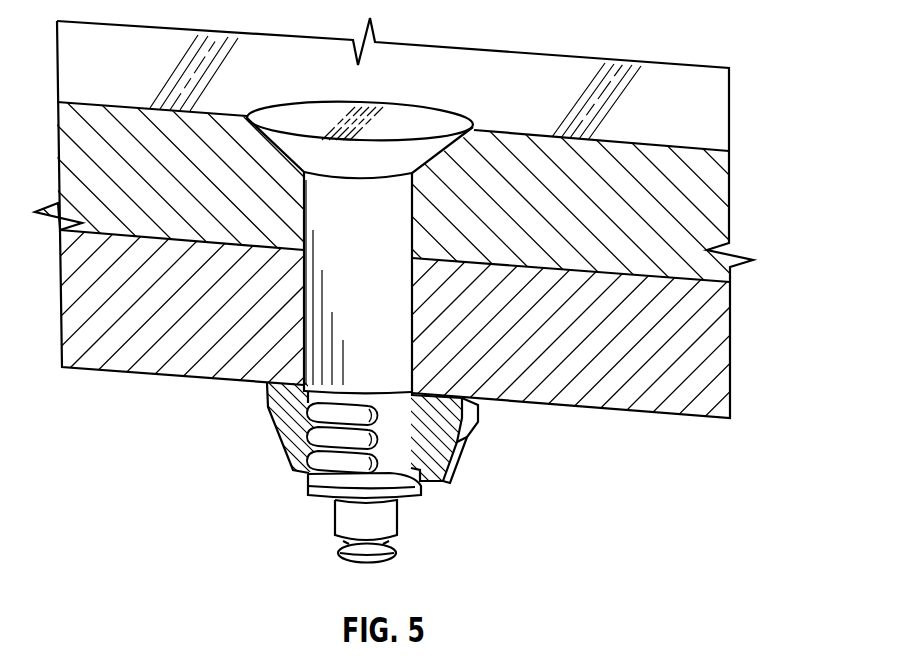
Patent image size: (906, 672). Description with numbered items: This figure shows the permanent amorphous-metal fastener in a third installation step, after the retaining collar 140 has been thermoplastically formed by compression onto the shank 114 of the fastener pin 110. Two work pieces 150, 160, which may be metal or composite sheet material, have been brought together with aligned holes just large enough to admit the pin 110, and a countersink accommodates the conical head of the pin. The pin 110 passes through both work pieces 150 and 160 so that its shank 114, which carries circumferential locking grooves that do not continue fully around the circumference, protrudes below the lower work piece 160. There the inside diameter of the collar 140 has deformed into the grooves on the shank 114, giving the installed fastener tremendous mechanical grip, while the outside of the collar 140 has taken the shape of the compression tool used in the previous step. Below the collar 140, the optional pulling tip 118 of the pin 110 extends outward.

The fastener pin 110 is at (320, 352).
The shank portion 114 is at (390, 470).
The pulling tip 118 is at (320, 500).
The retaining collar 140 is at (463, 447).
The work piece 150 is at (718, 212).
The work piece 160 is at (720, 363).